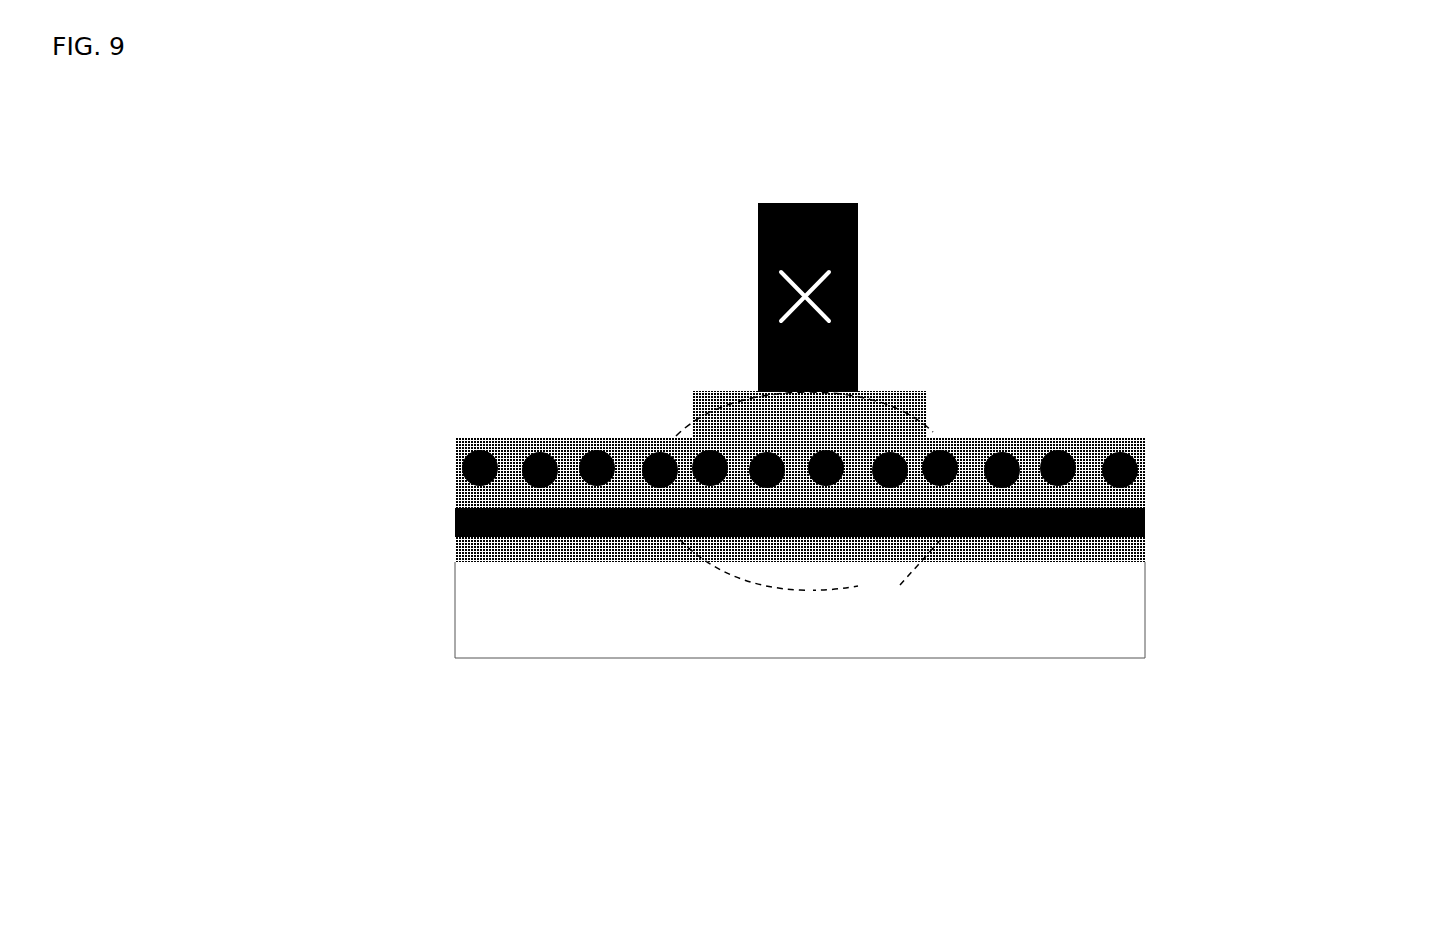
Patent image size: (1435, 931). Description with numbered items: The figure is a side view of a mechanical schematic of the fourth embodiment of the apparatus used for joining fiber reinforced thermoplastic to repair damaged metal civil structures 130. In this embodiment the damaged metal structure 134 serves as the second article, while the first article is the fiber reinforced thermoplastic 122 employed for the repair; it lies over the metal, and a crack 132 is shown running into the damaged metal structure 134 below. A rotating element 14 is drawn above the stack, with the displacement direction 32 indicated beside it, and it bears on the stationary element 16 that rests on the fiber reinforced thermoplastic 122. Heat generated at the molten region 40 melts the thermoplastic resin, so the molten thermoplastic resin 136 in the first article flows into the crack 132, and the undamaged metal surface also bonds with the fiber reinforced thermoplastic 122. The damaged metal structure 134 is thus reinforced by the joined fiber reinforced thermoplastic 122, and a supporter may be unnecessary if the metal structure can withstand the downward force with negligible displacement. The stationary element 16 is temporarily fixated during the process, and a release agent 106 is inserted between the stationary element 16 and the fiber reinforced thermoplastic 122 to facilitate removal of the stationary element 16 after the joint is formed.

The apparatus for repairing damaged metal civil structures 130 is at (405, 233).
The rotating element 14 is at (859, 251).
The displacement direction 32 is at (993, 297).
The stationary element 16 is at (810, 414).
The release agent 106 is at (688, 426).
The molten region 40 is at (935, 432).
The fiber reinforced thermoplastic 122 is at (633, 434).
The molten thermoplastic resin 136 is at (1153, 533).
The damaged metal structure 134 is at (800, 610).
The crack 132 is at (816, 580).